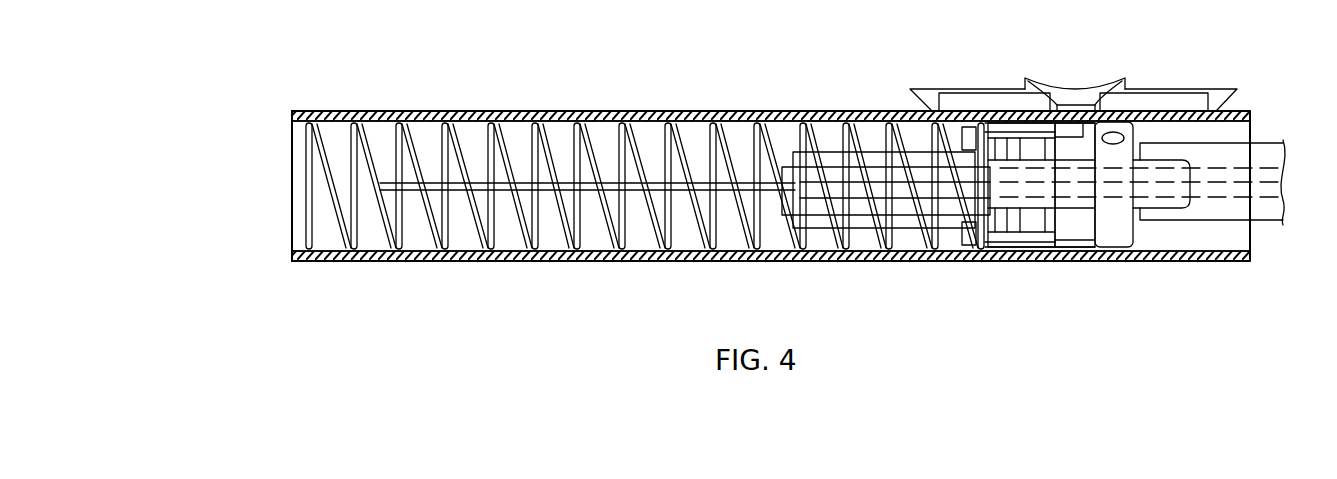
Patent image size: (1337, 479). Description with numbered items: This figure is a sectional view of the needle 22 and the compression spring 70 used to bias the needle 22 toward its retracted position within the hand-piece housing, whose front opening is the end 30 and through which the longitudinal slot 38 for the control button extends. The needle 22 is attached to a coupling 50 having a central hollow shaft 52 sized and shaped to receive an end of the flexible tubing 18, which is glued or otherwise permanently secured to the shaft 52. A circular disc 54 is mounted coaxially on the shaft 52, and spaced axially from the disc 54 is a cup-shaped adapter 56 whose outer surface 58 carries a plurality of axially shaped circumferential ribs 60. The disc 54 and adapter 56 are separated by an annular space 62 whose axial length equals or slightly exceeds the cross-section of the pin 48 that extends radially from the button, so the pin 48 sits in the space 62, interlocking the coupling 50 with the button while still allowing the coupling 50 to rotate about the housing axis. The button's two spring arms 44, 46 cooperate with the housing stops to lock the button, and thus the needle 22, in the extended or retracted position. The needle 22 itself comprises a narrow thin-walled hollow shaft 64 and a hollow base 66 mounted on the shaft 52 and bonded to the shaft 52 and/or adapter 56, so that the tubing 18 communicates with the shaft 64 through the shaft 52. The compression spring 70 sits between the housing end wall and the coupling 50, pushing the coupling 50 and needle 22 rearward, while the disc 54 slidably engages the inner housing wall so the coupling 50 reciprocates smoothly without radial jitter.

The flexible tubing 18 is at (1275, 216).
The needle 22 is at (575, 380).
The front end 30 is at (292, 217).
The longitudinal slot 38 is at (336, 262).
The spring arm 44 is at (926, 88).
The spring arm 46 is at (1167, 89).
The pin 48 is at (1083, 137).
The coupling 50 is at (1018, 264).
The central hollow shaft 52 is at (1173, 205).
The circular disc 54 is at (1118, 247).
The cup-shaped adapter 56 is at (1033, 262).
The outer surface 58 is at (985, 262).
The circumferential ribs 60 is at (993, 110).
The annular space 62 is at (1075, 247).
The hollow shaft 64 is at (425, 262).
The base 66 is at (603, 227).
The compression spring 70 is at (405, 123).